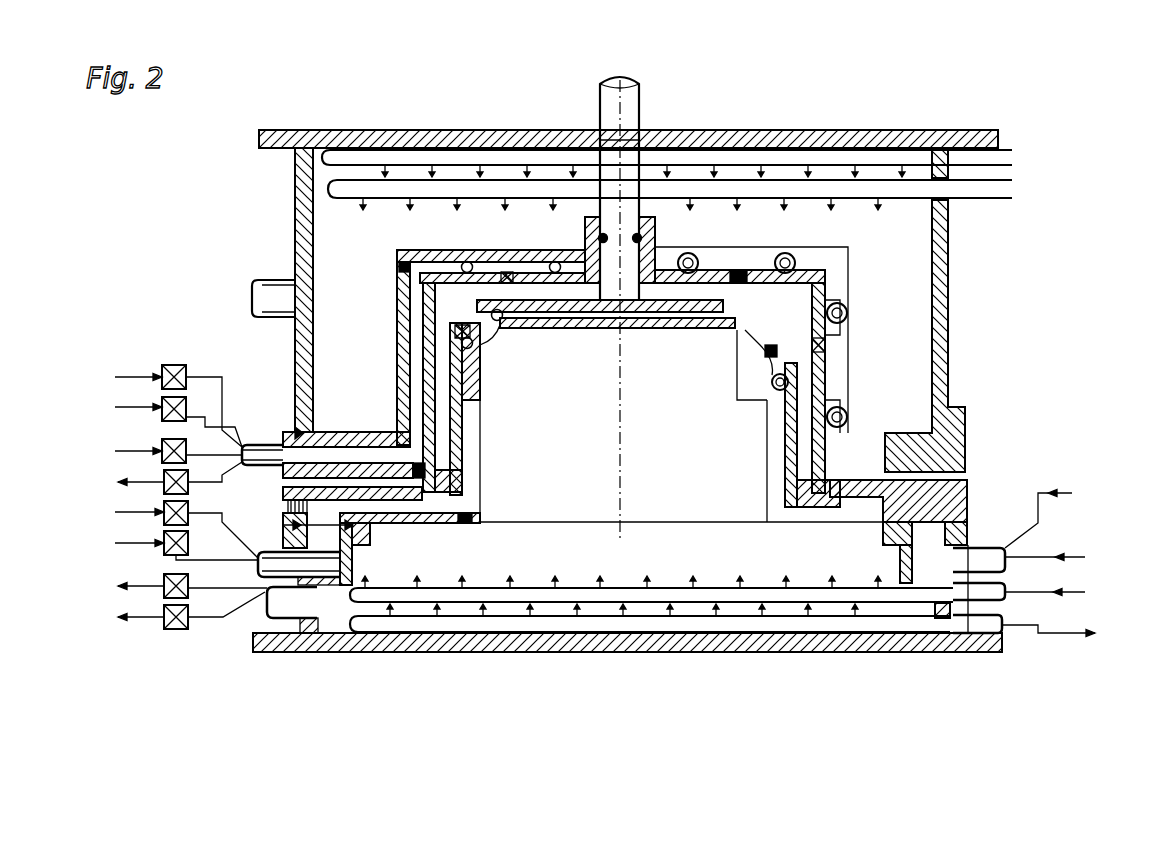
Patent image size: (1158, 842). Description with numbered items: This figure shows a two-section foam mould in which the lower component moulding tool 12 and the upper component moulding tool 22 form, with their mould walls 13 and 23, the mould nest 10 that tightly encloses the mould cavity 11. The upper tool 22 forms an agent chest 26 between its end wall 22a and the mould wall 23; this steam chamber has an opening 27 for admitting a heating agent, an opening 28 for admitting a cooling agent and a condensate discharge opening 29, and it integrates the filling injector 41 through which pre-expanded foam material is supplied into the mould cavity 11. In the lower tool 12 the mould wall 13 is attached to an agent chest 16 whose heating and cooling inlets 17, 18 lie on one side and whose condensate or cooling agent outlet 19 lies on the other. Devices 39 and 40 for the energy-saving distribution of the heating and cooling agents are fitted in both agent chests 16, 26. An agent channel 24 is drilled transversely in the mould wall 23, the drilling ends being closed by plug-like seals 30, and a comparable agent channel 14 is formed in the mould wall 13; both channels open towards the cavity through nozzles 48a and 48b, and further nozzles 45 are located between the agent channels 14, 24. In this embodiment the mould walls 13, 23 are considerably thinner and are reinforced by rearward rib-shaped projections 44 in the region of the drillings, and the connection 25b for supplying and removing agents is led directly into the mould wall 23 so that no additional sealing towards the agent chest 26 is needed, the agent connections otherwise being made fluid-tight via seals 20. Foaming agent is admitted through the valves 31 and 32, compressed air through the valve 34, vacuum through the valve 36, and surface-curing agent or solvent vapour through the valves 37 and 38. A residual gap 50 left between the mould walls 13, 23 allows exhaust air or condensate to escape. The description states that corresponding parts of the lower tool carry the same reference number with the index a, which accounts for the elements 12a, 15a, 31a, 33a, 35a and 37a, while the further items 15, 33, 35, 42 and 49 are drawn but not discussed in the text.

The mould nest 10 is at (478, 302).
The mould cavity 11 is at (783, 296).
The lower component moulding tool 12 is at (990, 658).
The base plate body 12a is at (546, 640).
The mould wall 13 is at (498, 395).
The agent channel 14 is at (735, 322).
The inlet tube 15 is at (273, 565).
The inlet tube 15a is at (985, 562).
The agent chest 16 is at (682, 426).
The heating inlet 17 is at (1002, 628).
The cooling inlet 18 is at (968, 592).
The condensate or cooling agent outlet 19 is at (288, 600).
The seals 20 is at (967, 447).
The upper component moulding tool 22 is at (962, 122).
The end wall 22a is at (687, 142).
The mould wall 23 is at (547, 266).
The agent channel 24 is at (400, 351).
The connection 25b is at (255, 445).
The agent chest 26 is at (630, 310).
The opening for admission of heating agent 27 is at (1013, 153).
The opening for admission of cooling agent 28 is at (1013, 190).
The condensate discharge opening 29 is at (268, 298).
The plug-like seals 30 is at (398, 268).
The valve for supply of foaming agent 31 is at (162, 555).
The valve connection 31a is at (1069, 546).
The valve 32 is at (160, 414).
The valve 33 is at (162, 599).
The valve connection 33a is at (1046, 586).
The valve 34 is at (160, 457).
The valve 35 is at (176, 632).
The valve connection 35a is at (1051, 623).
The valve 36 is at (162, 488).
The valve 37 is at (162, 522).
The valve connection 37a is at (1069, 519).
The valve 38 is at (172, 365).
The device for distribution of heating agent 39 is at (888, 156).
The device for distribution of cooling agent 40 is at (830, 190).
The filling injector 41 is at (628, 102).
The bolt 42 is at (333, 560).
The rib-shaped projections 44 is at (797, 255).
The nozzles 45 is at (736, 270).
The nozzles 48a is at (507, 277).
The nozzles 48b is at (747, 272).
The seal 49 is at (812, 345).
The residual gap 50 is at (812, 477).